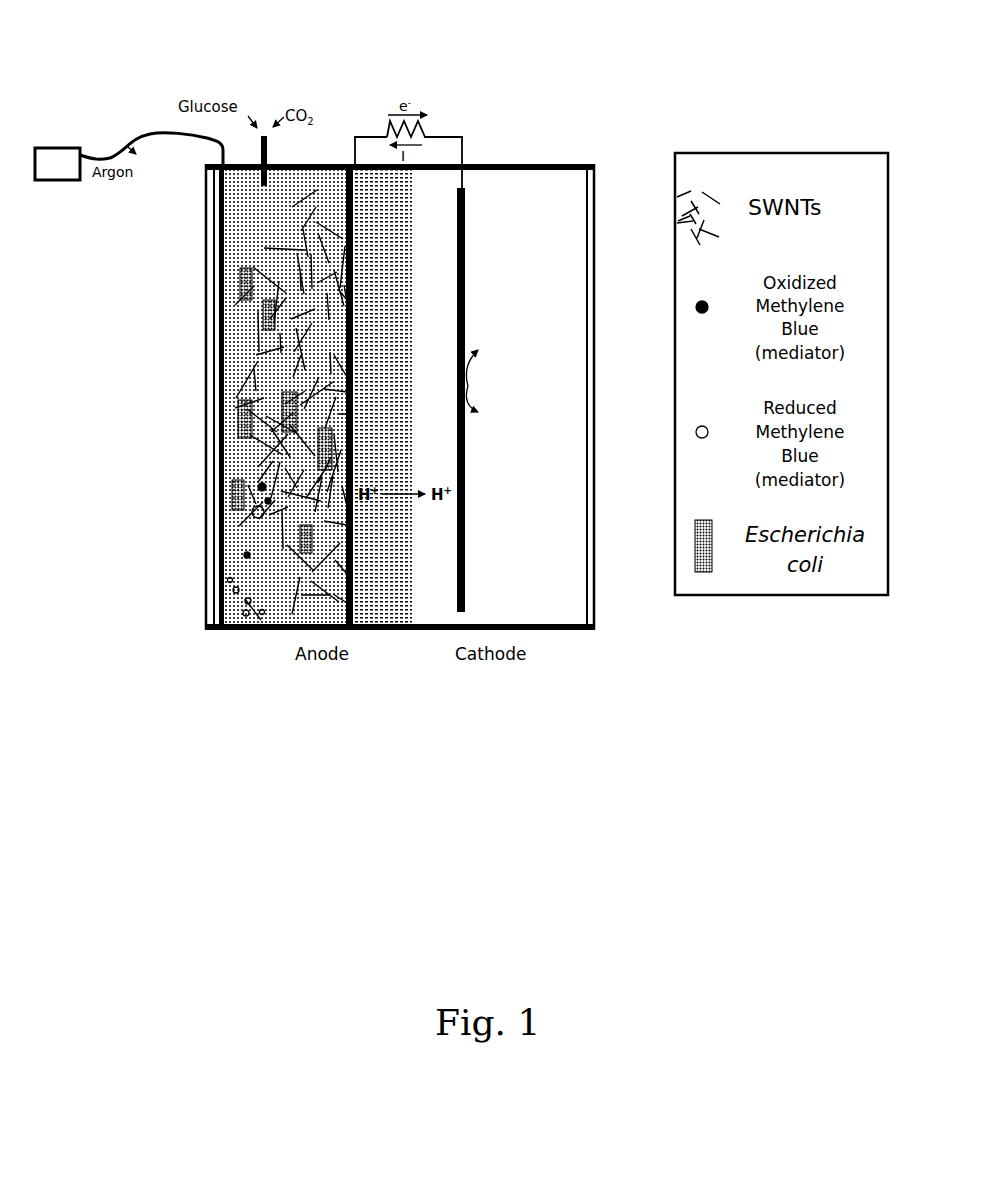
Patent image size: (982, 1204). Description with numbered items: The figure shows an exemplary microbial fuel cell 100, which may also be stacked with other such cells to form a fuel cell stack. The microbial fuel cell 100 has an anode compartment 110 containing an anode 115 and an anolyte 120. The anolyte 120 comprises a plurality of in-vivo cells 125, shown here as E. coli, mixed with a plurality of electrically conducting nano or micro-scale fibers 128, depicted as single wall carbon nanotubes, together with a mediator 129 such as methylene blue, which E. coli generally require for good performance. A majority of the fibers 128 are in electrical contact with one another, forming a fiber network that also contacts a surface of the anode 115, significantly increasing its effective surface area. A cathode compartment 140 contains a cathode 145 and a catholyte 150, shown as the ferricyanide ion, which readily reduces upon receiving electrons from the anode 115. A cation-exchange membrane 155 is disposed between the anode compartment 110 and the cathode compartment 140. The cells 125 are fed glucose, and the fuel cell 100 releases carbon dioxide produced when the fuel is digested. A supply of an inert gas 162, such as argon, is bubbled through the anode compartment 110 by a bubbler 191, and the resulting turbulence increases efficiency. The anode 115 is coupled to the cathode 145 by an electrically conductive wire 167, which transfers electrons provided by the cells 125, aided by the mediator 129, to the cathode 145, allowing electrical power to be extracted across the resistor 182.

The microbial fuel cell 100 is at (136, 744).
The anode compartment 110 is at (308, 182).
The anode 115 is at (345, 612).
The anolyte 120 is at (245, 463).
The in-vivo cells 125 is at (237, 423).
The electrically conducting nano or micro-scale fibers 128 is at (235, 335).
The mediator 129 is at (230, 503).
The cathode compartment 140 is at (503, 200).
The cathode 145 is at (456, 606).
The catholyte 150 is at (520, 342).
The cation-exchange membrane 155 is at (408, 633).
The supply of inert or unreactive gas 162 is at (131, 143).
The electrically conductive wire 167 is at (450, 133).
The resistor 182 is at (386, 120).
The bubbler 191 is at (44, 182).